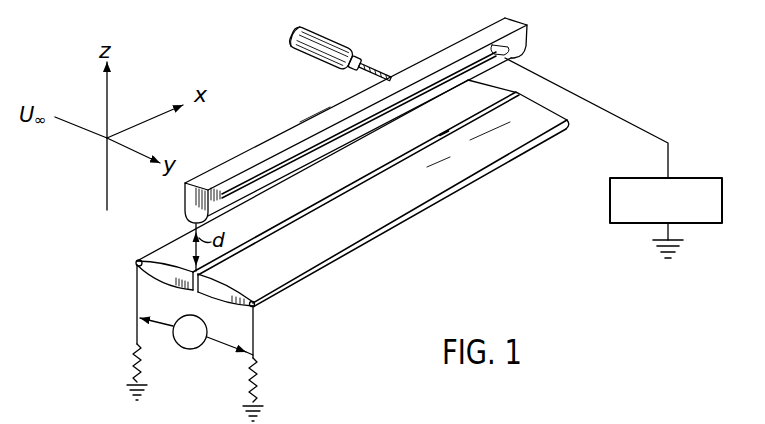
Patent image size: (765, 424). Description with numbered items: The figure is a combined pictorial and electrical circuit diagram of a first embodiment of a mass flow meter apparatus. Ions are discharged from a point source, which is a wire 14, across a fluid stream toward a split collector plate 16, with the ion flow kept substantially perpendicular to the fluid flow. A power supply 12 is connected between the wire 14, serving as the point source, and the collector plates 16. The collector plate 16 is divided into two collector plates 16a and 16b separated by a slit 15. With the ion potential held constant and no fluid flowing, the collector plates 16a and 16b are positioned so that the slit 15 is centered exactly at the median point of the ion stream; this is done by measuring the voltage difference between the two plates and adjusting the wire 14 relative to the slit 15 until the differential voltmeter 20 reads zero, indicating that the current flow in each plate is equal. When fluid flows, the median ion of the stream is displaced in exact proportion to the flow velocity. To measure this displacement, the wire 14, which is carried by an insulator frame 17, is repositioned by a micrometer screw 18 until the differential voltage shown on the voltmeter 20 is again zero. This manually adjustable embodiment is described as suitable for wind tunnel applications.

The power supply 12 is at (702, 178).
The wire 14 is at (448, 89).
The slit 15 is at (447, 135).
The split collector plate 16 is at (189, 297).
The collector plate 16a is at (336, 193).
The collector plate 16b is at (392, 223).
The insulator frame 17 is at (288, 133).
The micrometer screw 18 is at (366, 62).
The differential voltmeter 20 is at (194, 350).